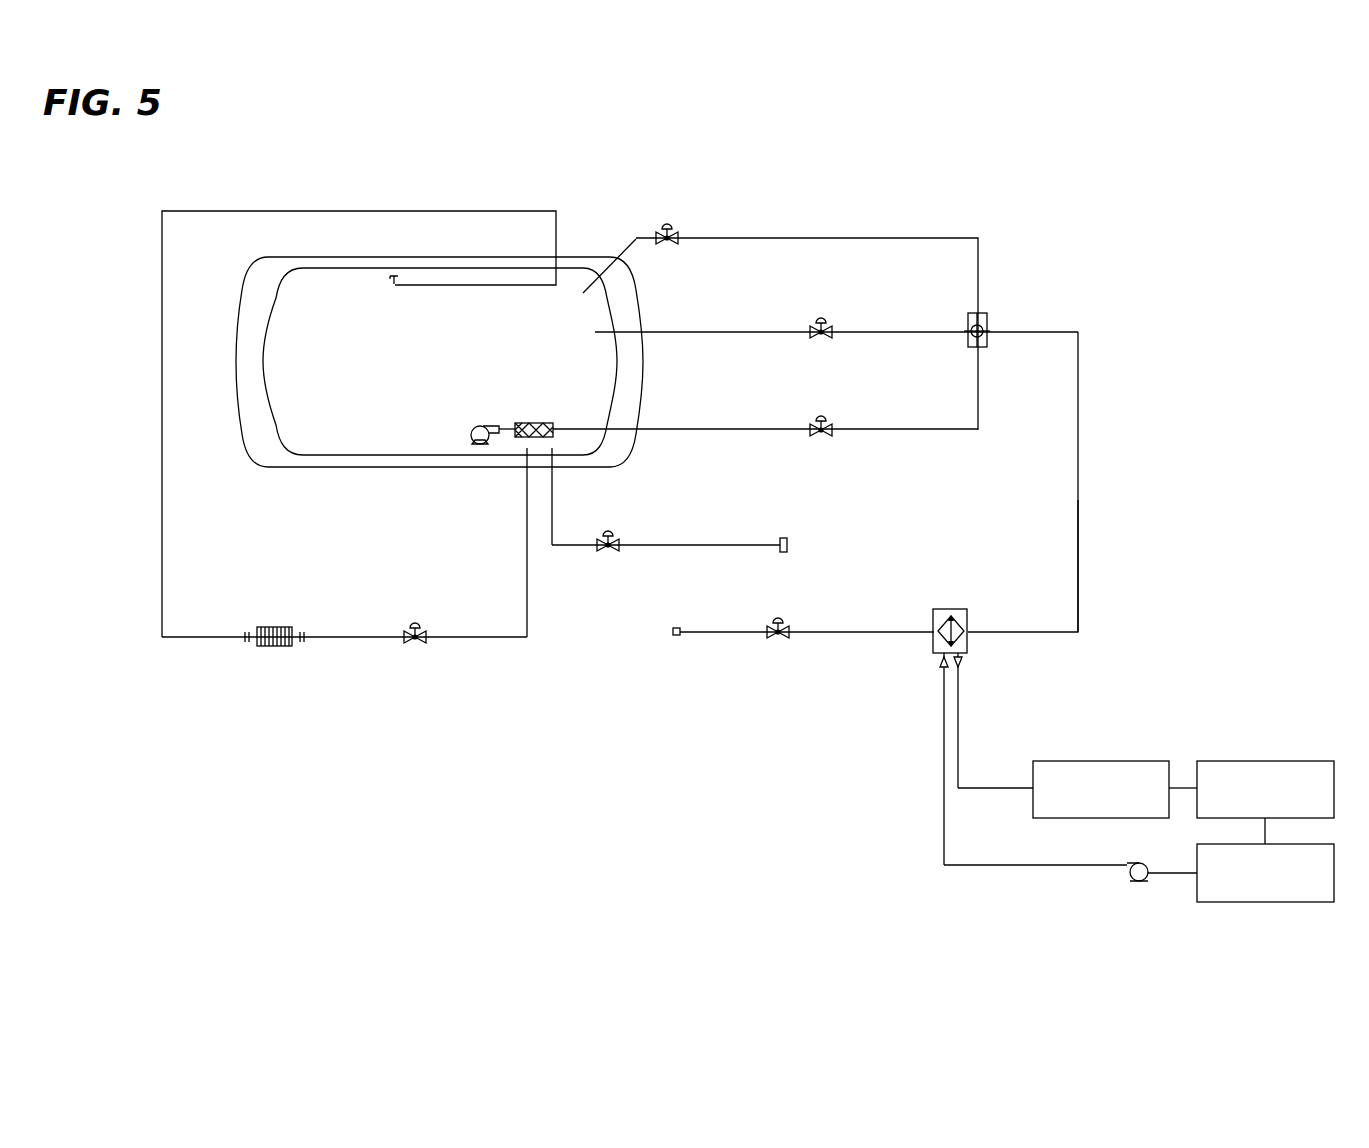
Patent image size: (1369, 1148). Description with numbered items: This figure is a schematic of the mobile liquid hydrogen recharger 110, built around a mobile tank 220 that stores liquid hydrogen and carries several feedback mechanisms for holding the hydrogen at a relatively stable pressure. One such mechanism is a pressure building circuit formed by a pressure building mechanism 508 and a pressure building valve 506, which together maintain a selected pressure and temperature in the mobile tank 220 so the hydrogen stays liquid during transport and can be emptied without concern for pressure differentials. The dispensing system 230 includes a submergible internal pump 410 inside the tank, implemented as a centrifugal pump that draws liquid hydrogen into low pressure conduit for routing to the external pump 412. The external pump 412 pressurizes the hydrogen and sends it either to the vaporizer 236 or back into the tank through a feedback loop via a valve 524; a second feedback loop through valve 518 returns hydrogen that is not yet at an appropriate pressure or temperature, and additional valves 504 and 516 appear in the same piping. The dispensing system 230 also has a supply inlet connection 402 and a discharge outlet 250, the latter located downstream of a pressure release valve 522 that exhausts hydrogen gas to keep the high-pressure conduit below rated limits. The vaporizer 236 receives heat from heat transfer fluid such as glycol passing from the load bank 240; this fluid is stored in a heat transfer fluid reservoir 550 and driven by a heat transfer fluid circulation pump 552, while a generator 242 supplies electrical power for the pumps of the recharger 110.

The mobile liquid hydrogen recharger 110 is at (1092, 206).
The mobile tank 220 is at (347, 470).
The dispensing system 230 is at (1092, 614).
The vaporizer 236 is at (970, 645).
The load bank 240 is at (1305, 760).
The generator 242 is at (1127, 760).
The discharge outlet 250 is at (679, 638).
The supply inlet connection 402 is at (785, 538).
The submergible internal pump 410 is at (477, 434).
The external pump 412 is at (987, 318).
The valve FB-1 504 is at (610, 548).
The pressure building valve 506 is at (418, 640).
The pressure building mechanism 508 is at (288, 643).
The valve FB-3 516 is at (823, 433).
The valve 518 is at (823, 335).
The pressure release valve 522 is at (782, 618).
The valve 524 is at (670, 241).
The heat transfer fluid reservoir 550 is at (1312, 843).
The heat transfer fluid circulation pump 552 is at (1130, 880).